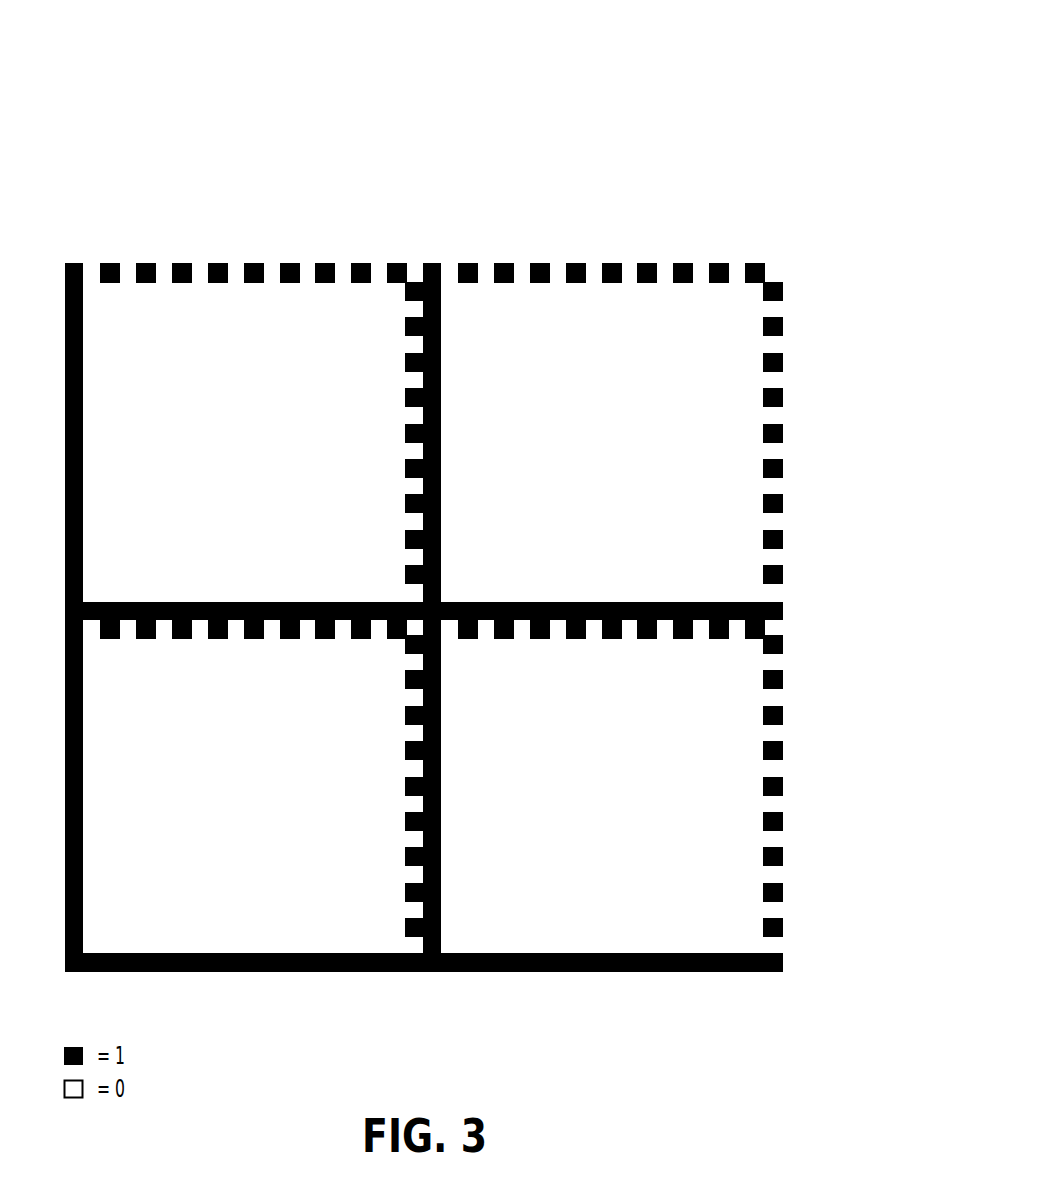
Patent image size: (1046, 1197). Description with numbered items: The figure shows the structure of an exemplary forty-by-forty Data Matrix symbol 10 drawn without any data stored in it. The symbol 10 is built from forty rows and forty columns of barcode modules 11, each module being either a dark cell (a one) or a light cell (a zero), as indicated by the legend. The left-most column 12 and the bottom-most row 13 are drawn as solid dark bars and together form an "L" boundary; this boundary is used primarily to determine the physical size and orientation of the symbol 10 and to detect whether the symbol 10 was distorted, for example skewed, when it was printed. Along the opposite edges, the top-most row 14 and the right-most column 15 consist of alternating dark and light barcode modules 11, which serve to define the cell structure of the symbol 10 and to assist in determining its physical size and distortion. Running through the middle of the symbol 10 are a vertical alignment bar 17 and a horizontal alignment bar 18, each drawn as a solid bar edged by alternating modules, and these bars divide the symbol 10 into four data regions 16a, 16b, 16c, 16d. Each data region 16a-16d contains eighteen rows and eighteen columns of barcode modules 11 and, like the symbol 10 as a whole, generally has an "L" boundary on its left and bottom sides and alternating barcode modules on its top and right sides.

The Data Matrix symbol 10 is at (677, 120).
The barcode module 11 is at (272, 265).
The left-most column 12 is at (74, 243).
The bottom-most row 13 is at (801, 963).
The top-most row 14 is at (803, 274).
The right-most column 15 is at (773, 243).
The data region 16a is at (266, 448).
The data region 16b is at (622, 448).
The data region 16c is at (622, 798).
The data region 16d is at (266, 798).
The vertical alignment bar 17 is at (432, 243).
The horizontal alignment bar 18 is at (803, 611).